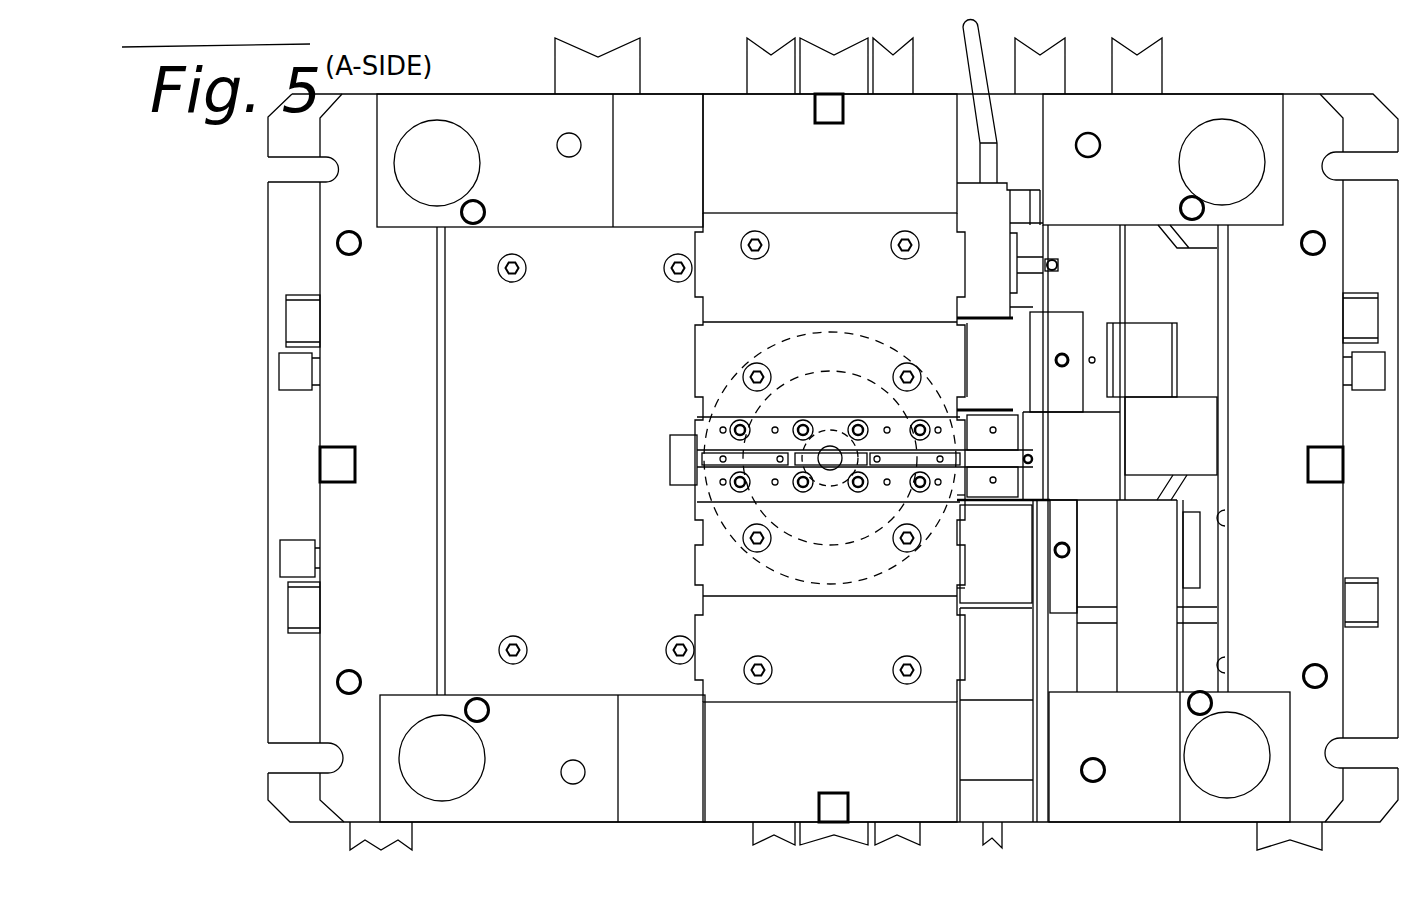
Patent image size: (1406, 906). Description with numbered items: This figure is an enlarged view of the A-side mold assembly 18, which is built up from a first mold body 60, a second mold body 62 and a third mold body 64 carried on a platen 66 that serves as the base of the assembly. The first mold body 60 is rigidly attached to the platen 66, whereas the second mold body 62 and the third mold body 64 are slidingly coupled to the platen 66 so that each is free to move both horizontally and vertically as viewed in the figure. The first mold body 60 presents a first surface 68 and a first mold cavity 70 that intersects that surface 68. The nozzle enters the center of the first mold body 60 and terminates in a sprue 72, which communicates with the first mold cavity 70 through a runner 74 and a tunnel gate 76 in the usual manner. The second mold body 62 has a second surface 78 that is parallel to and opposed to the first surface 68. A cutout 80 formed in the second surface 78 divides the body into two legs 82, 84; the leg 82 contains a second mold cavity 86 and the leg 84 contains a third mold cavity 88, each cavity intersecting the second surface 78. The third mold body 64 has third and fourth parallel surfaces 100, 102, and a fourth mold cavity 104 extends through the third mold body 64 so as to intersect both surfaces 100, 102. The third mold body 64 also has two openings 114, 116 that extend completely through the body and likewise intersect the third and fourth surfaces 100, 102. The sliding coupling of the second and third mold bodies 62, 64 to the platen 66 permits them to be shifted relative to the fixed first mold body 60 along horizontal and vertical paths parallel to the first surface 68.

The A-side mold assembly 18 is at (1216, 85).
The first mold body 60 is at (885, 585).
The second mold body 62 is at (1088, 242).
The third mold body 64 is at (1015, 497).
The platen 66 is at (298, 803).
The first surface 68 is at (968, 400).
The first mold cavity 70 is at (890, 442).
The sprue 72 is at (822, 448).
The runner 74 is at (835, 472).
The tunnel gate 76 is at (887, 452).
The second surface 78 is at (1012, 243).
The cutout 80 is at (1047, 318).
The leg 82 is at (1112, 452).
The leg 84 is at (1035, 296).
The second mold cavity 86 is at (1033, 460).
The third mold cavity 88 is at (1040, 255).
The third surface 100 is at (947, 503).
The fourth surface 102 is at (1022, 484).
The fourth mold cavity 104 is at (965, 590).
The opening 114 is at (955, 585).
The opening 116 is at (975, 346).